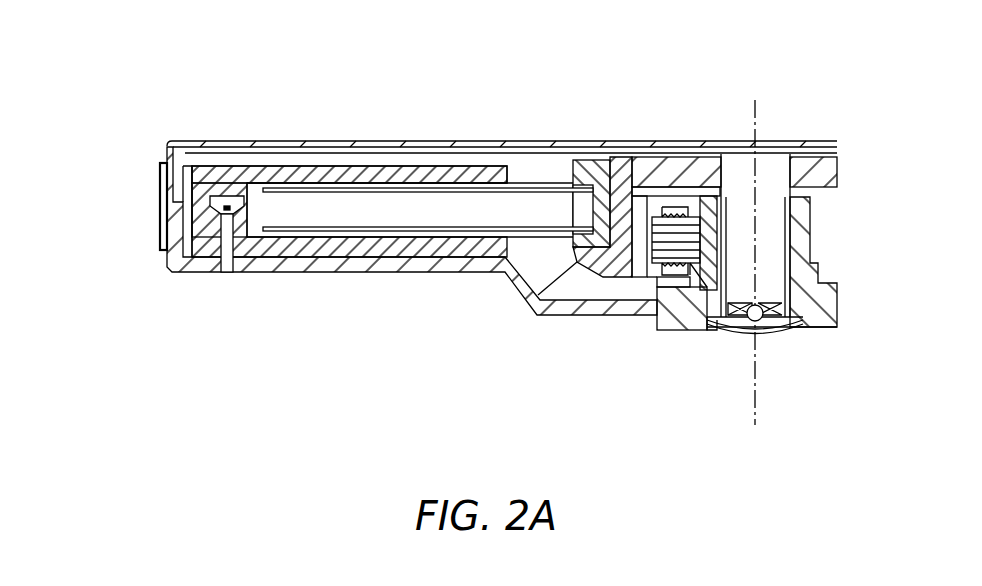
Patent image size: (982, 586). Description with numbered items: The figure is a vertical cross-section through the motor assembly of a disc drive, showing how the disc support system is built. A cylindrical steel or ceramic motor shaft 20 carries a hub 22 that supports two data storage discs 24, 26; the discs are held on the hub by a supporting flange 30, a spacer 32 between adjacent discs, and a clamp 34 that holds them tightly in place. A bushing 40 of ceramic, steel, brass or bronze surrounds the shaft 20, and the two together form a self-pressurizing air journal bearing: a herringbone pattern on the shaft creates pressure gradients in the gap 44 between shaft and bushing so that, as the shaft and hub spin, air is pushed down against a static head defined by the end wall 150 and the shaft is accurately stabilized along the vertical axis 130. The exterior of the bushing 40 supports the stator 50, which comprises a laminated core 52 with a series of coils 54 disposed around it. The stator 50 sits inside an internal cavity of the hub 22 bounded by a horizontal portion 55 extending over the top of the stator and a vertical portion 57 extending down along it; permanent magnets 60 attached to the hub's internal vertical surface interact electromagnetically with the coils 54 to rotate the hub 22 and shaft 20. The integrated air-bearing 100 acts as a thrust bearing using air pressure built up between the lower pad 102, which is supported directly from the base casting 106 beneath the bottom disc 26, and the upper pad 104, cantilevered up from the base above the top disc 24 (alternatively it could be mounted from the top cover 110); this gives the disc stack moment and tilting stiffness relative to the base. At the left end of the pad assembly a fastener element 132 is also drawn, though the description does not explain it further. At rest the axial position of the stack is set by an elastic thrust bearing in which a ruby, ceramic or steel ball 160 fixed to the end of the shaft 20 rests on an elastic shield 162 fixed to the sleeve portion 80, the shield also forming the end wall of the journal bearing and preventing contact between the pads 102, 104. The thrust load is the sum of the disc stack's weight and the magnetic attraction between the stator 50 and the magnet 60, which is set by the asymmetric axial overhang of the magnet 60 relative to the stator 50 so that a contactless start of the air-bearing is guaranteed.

The motor shaft 20 is at (742, 165).
The hub 22 is at (662, 147).
The data storage disc 24 is at (482, 225).
The data storage disc 26 is at (519, 185).
The supporting flange 30 is at (533, 306).
The spacer 32 is at (577, 195).
The clamp 34 is at (601, 158).
The bushing 40 is at (702, 327).
The gap 44 is at (790, 187).
The stator 50 is at (662, 243).
The laminated core 52 is at (700, 262).
The coils 54 is at (675, 272).
The horizontal portion 55 is at (693, 157).
The vertical portion 57 is at (628, 160).
The permanent magnets 60 is at (640, 270).
The sleeve portion 80 is at (720, 328).
The integrated air-bearing 100 is at (277, 215).
The lower pad 102 is at (330, 252).
The upper pad 104 is at (343, 168).
The base casting 106 is at (293, 263).
The top cover 110 is at (458, 140).
The vertical axis 130 is at (755, 408).
The screw 132 is at (240, 208).
The end wall 150 is at (738, 328).
The ball 160 is at (757, 333).
The elastic shield 162 is at (785, 328).